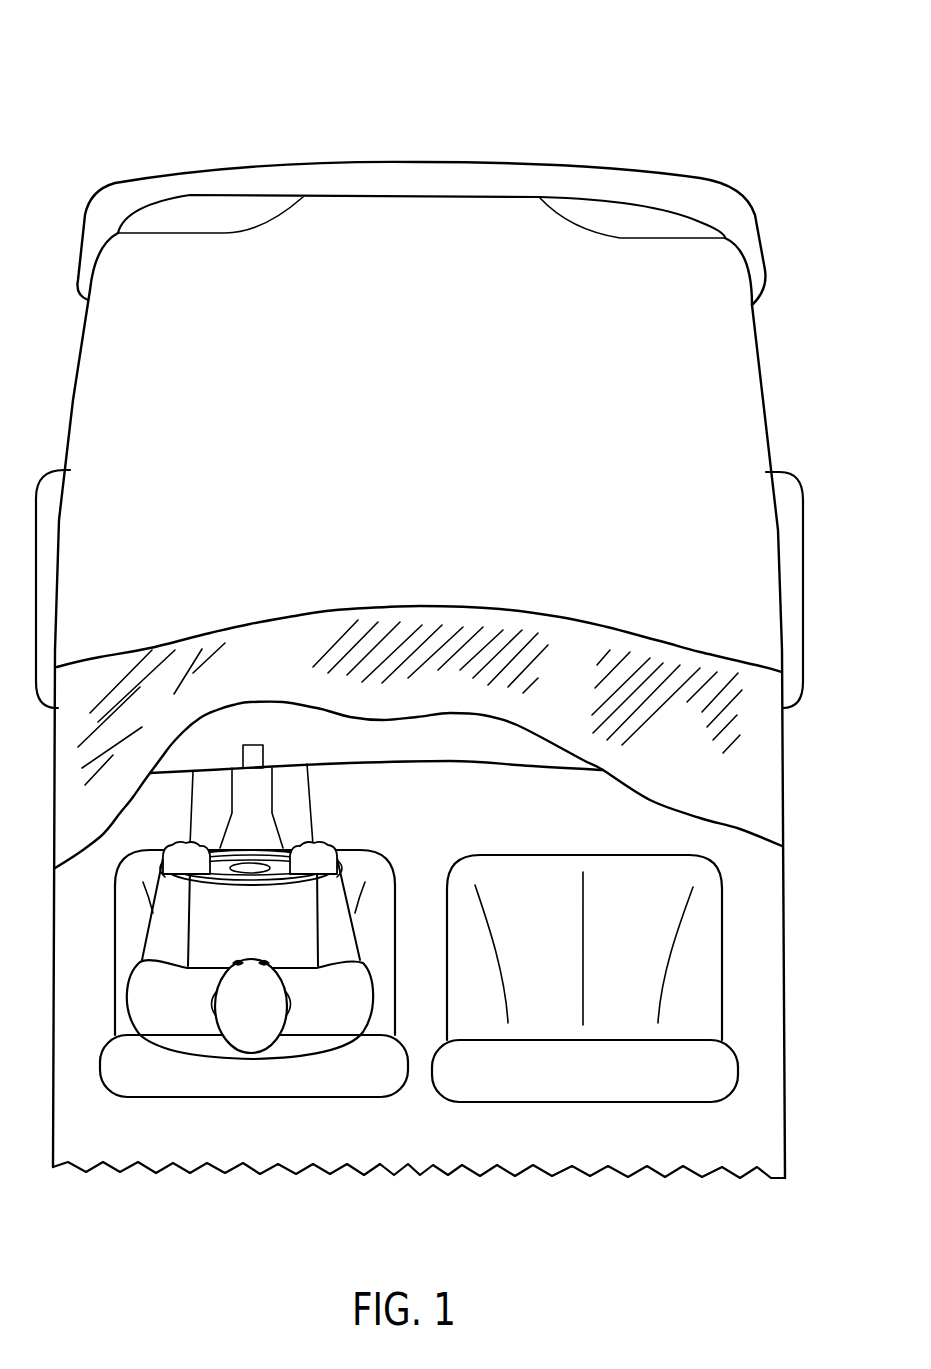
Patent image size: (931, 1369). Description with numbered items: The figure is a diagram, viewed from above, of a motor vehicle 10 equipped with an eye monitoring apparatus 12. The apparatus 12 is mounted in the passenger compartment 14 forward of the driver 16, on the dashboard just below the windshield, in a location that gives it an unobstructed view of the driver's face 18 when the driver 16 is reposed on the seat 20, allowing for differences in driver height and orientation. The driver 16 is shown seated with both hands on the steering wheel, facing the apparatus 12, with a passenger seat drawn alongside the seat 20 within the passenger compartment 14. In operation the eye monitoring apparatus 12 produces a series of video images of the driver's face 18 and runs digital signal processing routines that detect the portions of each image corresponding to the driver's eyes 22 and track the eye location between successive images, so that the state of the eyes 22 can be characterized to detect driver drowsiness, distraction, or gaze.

The motor vehicle 10 is at (160, 128).
The eye monitoring apparatus 12 is at (249, 744).
The passenger compartment 14 is at (390, 1122).
The driver 16 is at (193, 1043).
The driver's face 18 is at (268, 1005).
The seat 20 is at (125, 917).
The driver's eyes 22 is at (263, 961).